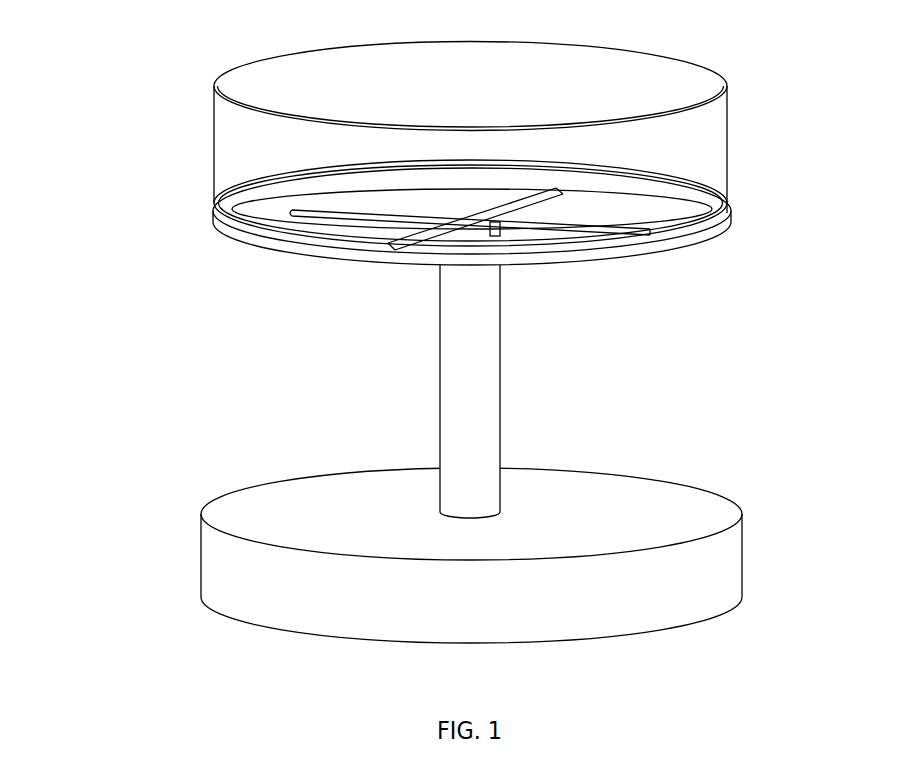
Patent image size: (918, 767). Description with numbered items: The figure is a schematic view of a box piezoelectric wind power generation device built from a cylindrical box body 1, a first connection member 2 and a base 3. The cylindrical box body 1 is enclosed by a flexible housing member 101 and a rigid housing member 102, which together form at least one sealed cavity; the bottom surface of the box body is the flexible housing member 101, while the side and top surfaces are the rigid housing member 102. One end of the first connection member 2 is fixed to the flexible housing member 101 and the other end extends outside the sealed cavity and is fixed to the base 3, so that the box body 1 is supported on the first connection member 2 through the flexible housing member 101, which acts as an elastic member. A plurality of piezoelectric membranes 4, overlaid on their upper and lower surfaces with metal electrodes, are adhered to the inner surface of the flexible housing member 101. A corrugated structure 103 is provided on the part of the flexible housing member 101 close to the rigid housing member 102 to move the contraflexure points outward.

The cylindrical box body 1 is at (436, 163).
The flexible housing member 101 is at (332, 229).
The rigid housing member 102 is at (275, 67).
The corrugated structure 103 is at (278, 195).
The first connection member 2 is at (477, 388).
The base 3 is at (593, 503).
The piezoelectric membranes 4 is at (432, 233).